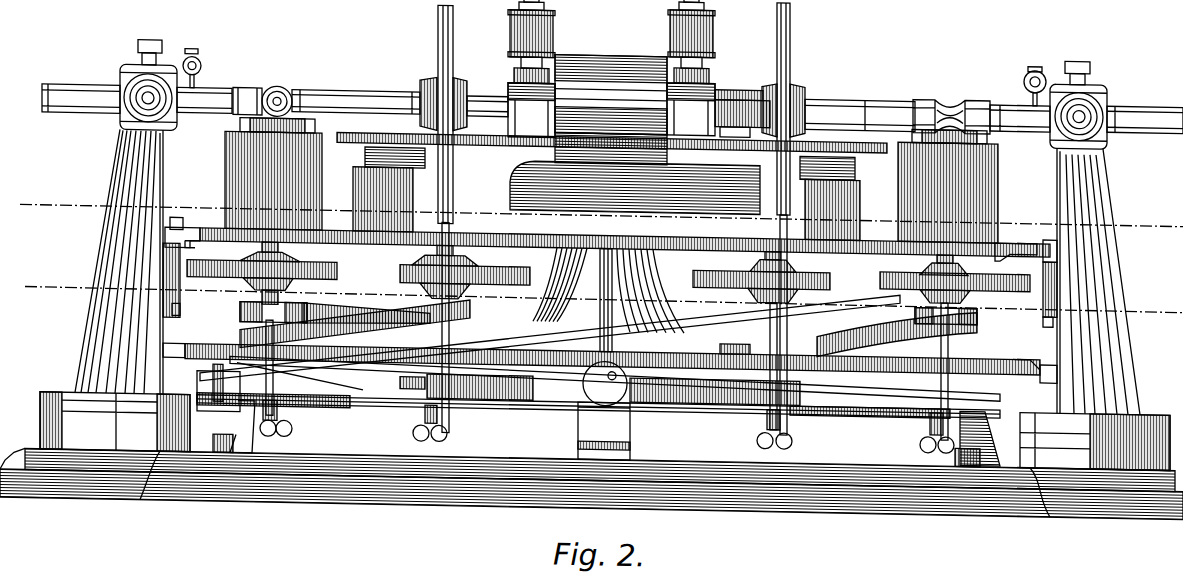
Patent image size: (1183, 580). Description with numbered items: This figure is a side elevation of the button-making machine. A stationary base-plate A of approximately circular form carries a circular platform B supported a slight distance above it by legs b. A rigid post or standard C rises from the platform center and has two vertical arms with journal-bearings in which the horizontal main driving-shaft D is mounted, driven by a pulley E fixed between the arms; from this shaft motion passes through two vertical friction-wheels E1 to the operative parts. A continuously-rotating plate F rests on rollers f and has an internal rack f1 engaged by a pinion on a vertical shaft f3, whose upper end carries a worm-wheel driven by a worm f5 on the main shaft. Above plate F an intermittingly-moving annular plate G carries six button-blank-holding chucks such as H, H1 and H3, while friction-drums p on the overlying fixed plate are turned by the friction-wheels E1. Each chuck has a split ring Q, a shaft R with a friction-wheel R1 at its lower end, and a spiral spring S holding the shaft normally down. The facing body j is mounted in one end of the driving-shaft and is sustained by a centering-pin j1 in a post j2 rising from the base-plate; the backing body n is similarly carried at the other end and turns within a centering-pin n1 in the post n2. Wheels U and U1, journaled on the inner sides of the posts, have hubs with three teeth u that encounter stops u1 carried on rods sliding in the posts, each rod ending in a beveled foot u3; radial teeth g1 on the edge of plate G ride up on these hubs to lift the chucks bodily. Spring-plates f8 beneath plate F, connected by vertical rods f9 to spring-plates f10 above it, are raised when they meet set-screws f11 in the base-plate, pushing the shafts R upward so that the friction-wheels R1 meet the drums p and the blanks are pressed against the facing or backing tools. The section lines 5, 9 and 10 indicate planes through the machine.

The base-plate A is at (496, 442).
The circular platform B is at (536, 399).
The legs b is at (607, 431).
The post or standard C is at (556, 252).
The main driving-shaft D is at (631, 105).
The pulley E is at (611, 110).
The vertical friction-wheels E1 is at (623, 220).
The continuously-rotating plate F is at (601, 328).
The rollers f is at (480, 332).
The internal rack f1 is at (490, 112).
The vertical shaft f3 is at (748, 276).
The worm f5 is at (746, 76).
The spring-plates f8 is at (535, 389).
The vertical rods f9 is at (790, 322).
The spring-plates f10 is at (240, 303).
The set-screws f11 is at (280, 414).
The annular plate G is at (625, 234).
The radial teeth g1 is at (197, 238).
The button-blank-holding chuck H is at (262, 180).
The button-blank-holding chuck H1 is at (512, 178).
The button-blank-holding chuck H3 is at (957, 192).
The cylindrical body j is at (299, 84).
The centering-pin j1 is at (219, 84).
The post j2 is at (120, 149).
The horizontal body n is at (951, 88).
The centering-pin n1 is at (1024, 112).
The post n2 is at (1042, 168).
The friction-drums p is at (353, 185).
The split ring Q is at (240, 121).
The shaft R is at (290, 286).
The friction-wheel R1 is at (612, 298).
The spiral spring S is at (284, 243).
The wheel U is at (1057, 268).
The wheel U1 is at (163, 267).
The teeth u is at (1060, 226).
The stop u1 is at (165, 232).
The beveled foot u3 is at (1040, 347).
The section line 5 is at (601, 215).
The frame leg 9 is at (600, 298).
The frame leg 10 is at (550, 290).